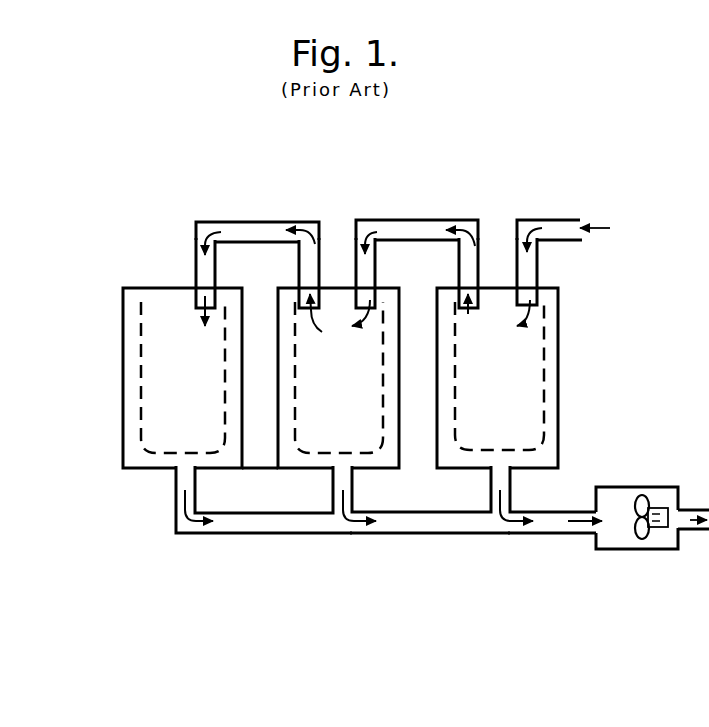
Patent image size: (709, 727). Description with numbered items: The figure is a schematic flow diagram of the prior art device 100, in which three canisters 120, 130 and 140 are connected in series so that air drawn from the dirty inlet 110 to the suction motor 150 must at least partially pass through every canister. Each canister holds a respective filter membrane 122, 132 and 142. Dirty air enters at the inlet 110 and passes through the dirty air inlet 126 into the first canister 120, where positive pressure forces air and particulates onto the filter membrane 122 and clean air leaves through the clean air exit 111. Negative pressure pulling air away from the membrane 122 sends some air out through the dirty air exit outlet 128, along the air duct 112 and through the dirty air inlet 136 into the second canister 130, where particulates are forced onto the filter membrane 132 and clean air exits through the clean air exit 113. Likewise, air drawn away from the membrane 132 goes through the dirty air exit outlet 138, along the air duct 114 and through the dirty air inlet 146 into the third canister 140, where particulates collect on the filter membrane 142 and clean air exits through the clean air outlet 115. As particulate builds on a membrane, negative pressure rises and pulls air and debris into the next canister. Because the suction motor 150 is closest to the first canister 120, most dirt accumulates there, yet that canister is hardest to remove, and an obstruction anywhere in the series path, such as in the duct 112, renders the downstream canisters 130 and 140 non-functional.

The '414 application device 100 is at (391, 191).
The dirty inlet 110 is at (562, 218).
The clean air exit 111 is at (490, 486).
The air duct 112 is at (414, 223).
The clean air exit 113 is at (331, 487).
The air duct 114 is at (249, 231).
The clean air outlet 115 is at (177, 493).
The first canister 120 is at (520, 380).
The filter membrane 122 is at (547, 413).
The dirty air inlet 126 is at (540, 272).
The dirty air exit outlet 128 is at (481, 252).
The second canister 130 is at (355, 381).
The filter membrane 132 is at (383, 390).
The dirty air inlet 136 is at (378, 272).
The dirty air exit outlet 138 is at (322, 250).
The third canister 140 is at (196, 372).
The filter membrane 142 is at (139, 353).
The dirty air inlet 146 is at (203, 270).
The suction motor 150 is at (637, 546).